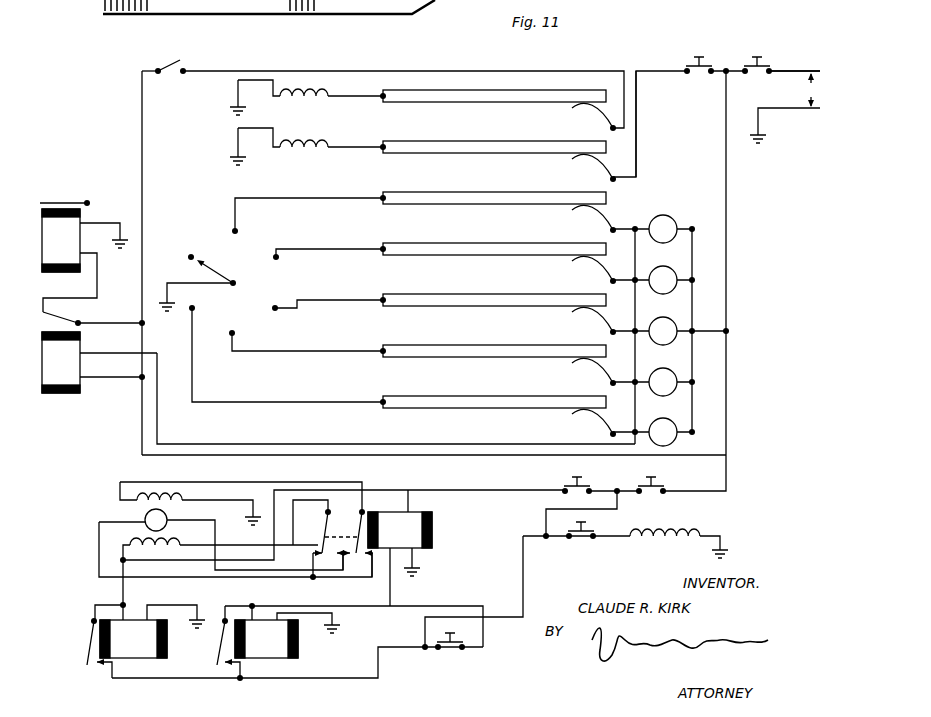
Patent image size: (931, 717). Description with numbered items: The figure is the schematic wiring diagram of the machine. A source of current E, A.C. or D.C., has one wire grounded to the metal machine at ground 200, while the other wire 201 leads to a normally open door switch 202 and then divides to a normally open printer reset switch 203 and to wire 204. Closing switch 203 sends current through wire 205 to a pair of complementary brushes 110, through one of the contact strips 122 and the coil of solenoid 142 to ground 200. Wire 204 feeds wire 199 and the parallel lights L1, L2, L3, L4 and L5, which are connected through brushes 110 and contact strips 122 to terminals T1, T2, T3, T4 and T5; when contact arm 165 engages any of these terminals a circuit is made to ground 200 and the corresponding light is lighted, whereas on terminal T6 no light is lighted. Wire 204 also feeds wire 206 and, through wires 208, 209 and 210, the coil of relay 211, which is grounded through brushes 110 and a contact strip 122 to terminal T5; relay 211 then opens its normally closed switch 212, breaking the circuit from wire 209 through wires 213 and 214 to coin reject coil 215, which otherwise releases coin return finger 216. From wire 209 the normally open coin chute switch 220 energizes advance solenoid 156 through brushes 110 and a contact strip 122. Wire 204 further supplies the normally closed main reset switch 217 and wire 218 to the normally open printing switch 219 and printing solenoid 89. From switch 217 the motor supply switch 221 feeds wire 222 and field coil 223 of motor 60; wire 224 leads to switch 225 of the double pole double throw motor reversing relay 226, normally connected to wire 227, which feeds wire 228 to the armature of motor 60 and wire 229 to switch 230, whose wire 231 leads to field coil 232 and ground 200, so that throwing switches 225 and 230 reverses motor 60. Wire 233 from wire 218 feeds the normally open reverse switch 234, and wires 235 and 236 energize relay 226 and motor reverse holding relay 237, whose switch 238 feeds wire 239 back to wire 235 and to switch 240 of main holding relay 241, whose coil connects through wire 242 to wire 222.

The coin chute switch 220 is at (178, 63).
The wire 209 is at (142, 128).
The wire 208 is at (533, 455).
The wire 204 is at (726, 260).
The wire 206 is at (726, 408).
The wire 199 is at (712, 331).
The wire 205 is at (636, 125).
The printer reset switch 203 is at (700, 66).
The door switch 202 is at (758, 68).
The wire 201 is at (796, 74).
The source of current E is at (789, 104).
The ground 200 is at (232, 107).
The advance solenoid 156 is at (330, 100).
The solenoid 142 is at (328, 152).
The contact strips 122 is at (490, 103).
The brushes 110 is at (598, 112).
The light L1 is at (654, 432).
The light L2 is at (654, 382).
The light L3 is at (654, 331).
The light L4 is at (654, 280).
The light L5 is at (654, 229).
The terminal T1 is at (195, 309).
The terminal T2 is at (236, 334).
The terminal T3 is at (275, 306).
The terminal T4 is at (275, 257).
The terminal T5 is at (236, 230).
The terminal T6 is at (190, 256).
The contact arm 165 is at (215, 273).
The coin return finger 216 is at (60, 203).
The coin reject coil 215 is at (80, 222).
The wire 214 is at (97, 298).
The switch 212 is at (55, 318).
The wire 213 is at (95, 323).
The relay 211 is at (72, 393).
The wire 210 is at (128, 378).
The wire 231 is at (190, 482).
The field coil 232 is at (148, 498).
The motor 60 is at (145, 515).
The wire 229 is at (183, 520).
The wire 228 is at (99, 548).
The field coil 223 is at (134, 545).
The wire 222 is at (432, 490).
The wire 242 is at (123, 583).
The wire 224 is at (294, 506).
The switch 225 is at (330, 520).
The switch 230 is at (341, 528).
The wire 227 is at (313, 562).
The motor reversing relay 226 is at (432, 530).
The wire 236 is at (389, 582).
The wire 235 is at (404, 607).
The main holding relay 241 is at (130, 624).
The switch 240 is at (89, 646).
The motor reverse holding relay 237 is at (272, 658).
The switch 238 is at (219, 652).
The wire 239 is at (332, 679).
The reverse switch 234 is at (452, 651).
The wire 233 is at (523, 566).
The motor supply switch 221 is at (583, 486).
The main reset switch 217 is at (660, 494).
The wire 218 is at (546, 512).
The printing switch 219 is at (584, 540).
The printing solenoid 89 is at (660, 540).